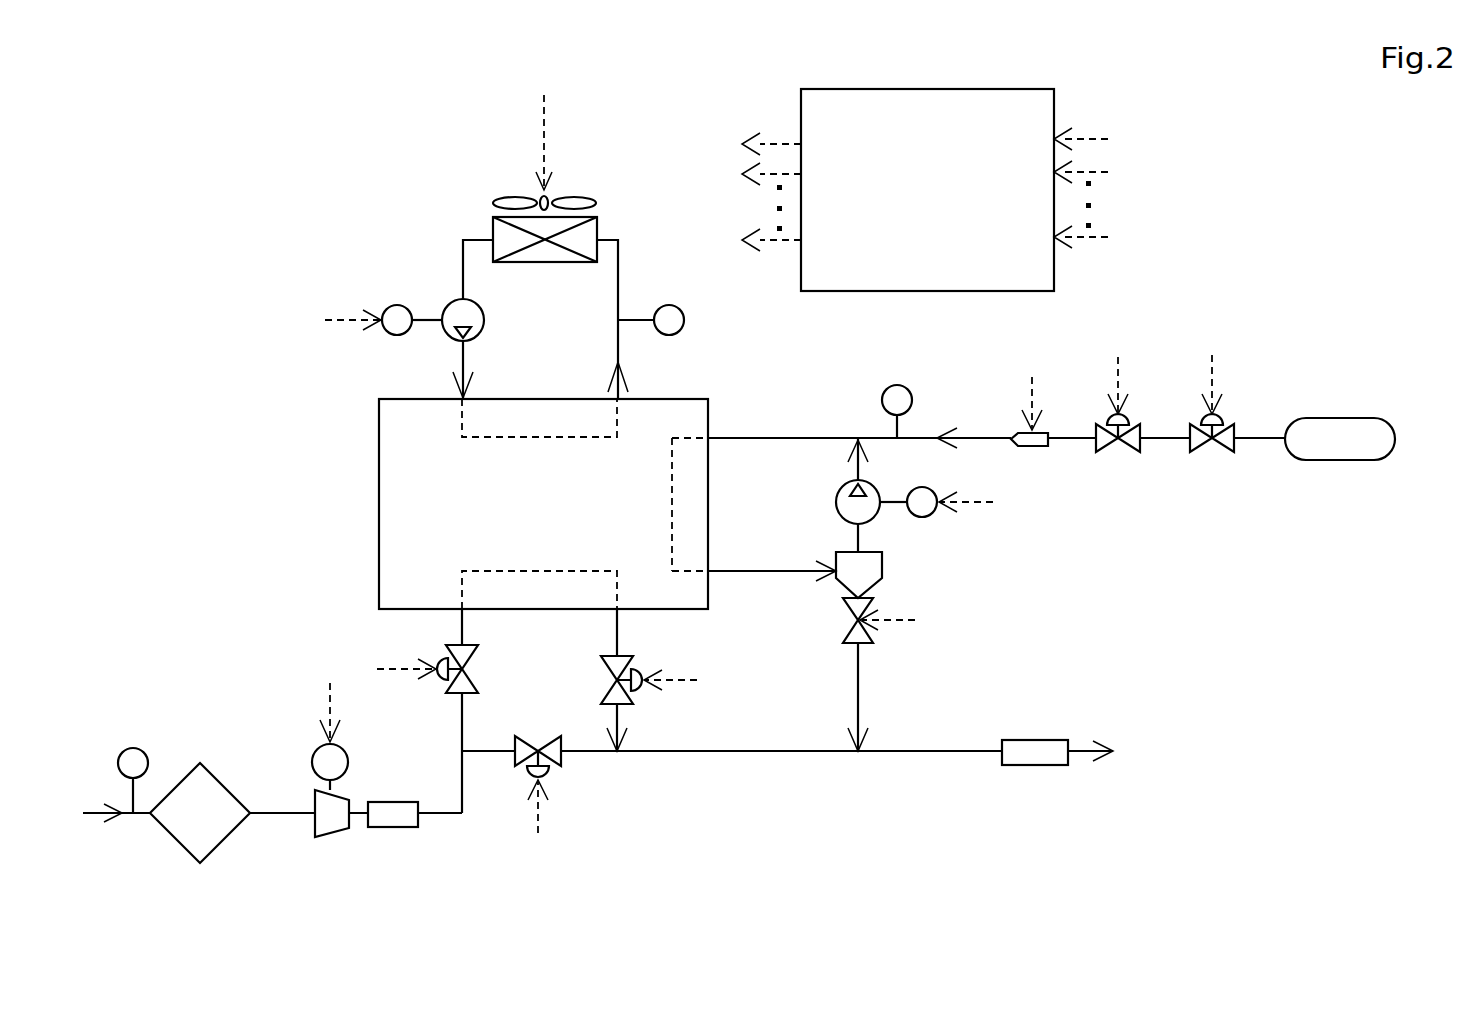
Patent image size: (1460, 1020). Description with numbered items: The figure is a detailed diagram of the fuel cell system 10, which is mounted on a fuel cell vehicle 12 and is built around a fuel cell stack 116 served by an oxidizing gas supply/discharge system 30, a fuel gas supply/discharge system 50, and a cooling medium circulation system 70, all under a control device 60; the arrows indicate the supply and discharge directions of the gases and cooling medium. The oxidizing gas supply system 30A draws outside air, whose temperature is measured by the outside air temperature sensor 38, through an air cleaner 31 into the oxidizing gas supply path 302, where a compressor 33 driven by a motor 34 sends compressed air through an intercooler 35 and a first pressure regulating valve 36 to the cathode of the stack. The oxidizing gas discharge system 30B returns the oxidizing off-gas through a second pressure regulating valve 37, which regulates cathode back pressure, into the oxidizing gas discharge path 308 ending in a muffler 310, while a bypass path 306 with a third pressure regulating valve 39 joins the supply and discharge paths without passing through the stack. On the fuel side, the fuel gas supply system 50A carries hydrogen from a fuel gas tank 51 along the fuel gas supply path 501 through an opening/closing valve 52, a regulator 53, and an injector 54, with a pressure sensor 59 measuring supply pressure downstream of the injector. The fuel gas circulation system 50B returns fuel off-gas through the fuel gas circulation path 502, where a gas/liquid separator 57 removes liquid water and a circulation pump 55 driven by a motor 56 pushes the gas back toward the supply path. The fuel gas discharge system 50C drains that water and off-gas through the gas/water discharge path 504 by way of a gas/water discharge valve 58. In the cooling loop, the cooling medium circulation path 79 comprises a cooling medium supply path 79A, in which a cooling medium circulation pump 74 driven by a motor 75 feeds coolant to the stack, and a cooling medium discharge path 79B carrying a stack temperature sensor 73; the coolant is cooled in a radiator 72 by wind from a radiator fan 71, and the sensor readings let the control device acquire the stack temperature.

The fuel cell system 10 is at (393, 138).
The fuel cell vehicle 12 is at (285, 120).
The oxidizing gas supply/discharge system 30 is at (262, 640).
The oxidizing gas supply system 30A is at (253, 752).
The oxidizing gas discharge system 30B is at (667, 793).
The air cleaner 31 is at (182, 775).
The compressor 33 is at (313, 828).
The motor 34 is at (318, 750).
The intercooler 35 is at (372, 828).
The first pressure regulating valve 36 is at (446, 660).
The second pressure regulating valve 37 is at (602, 678).
The outside air temperature sensor 38 is at (133, 748).
The third pressure regulating valve 39 is at (527, 780).
The oxidizing gas supply path 302 is at (440, 814).
The bypass path 306 is at (590, 752).
The oxidizing gas discharge path 308 is at (743, 751).
The muffler 310 is at (1032, 740).
The fuel gas supply/discharge system 50 is at (1352, 352).
The fuel gas supply system 50A is at (1167, 530).
The fuel gas circulation system 50B is at (808, 505).
The fuel gas discharge system 50C is at (970, 632).
The fuel gas tank 51 is at (1340, 418).
The opening/closing valve 52 is at (1222, 452).
The regulator 53 is at (1128, 452).
The injector 54 is at (1030, 450).
The circulation pump 55 is at (874, 520).
The motor 56 is at (928, 489).
The gas/liquid separator 57 is at (882, 565).
The gas/water discharge valve 58 is at (872, 636).
The pressure sensor 59 is at (902, 388).
The fuel gas supply path 501 is at (977, 438).
The fuel gas circulation path 502 is at (768, 570).
The gas/water discharge path 504 is at (855, 697).
The control device 60 is at (981, 89).
The cooling medium circulation system 70 is at (410, 198).
The radiator fan 71 is at (510, 197).
The radiator 72 is at (593, 216).
The stack temperature sensor 73 is at (669, 305).
The cooling medium circulation pump 74 is at (484, 322).
The motor 75 is at (402, 304).
The cooling medium circulation path 79 is at (544, 311).
The cooling medium supply path 79A is at (463, 262).
The cooling medium discharge path 79B is at (618, 352).
The fuel cell stack 116 is at (708, 400).